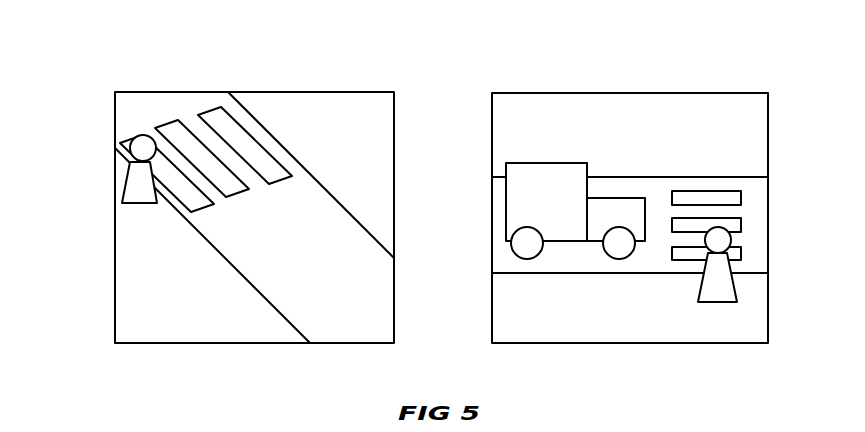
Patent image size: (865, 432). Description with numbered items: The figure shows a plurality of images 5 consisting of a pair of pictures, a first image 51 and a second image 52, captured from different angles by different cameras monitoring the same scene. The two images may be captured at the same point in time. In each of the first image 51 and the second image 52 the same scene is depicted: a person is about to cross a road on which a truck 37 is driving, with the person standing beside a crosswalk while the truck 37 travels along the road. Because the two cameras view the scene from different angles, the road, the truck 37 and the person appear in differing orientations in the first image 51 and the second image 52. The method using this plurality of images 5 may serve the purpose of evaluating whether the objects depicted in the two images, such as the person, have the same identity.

The plurality of images 5 is at (68, 75).
The first image 51 is at (322, 92).
The second image 52 is at (605, 93).
The truck 37 is at (562, 192).